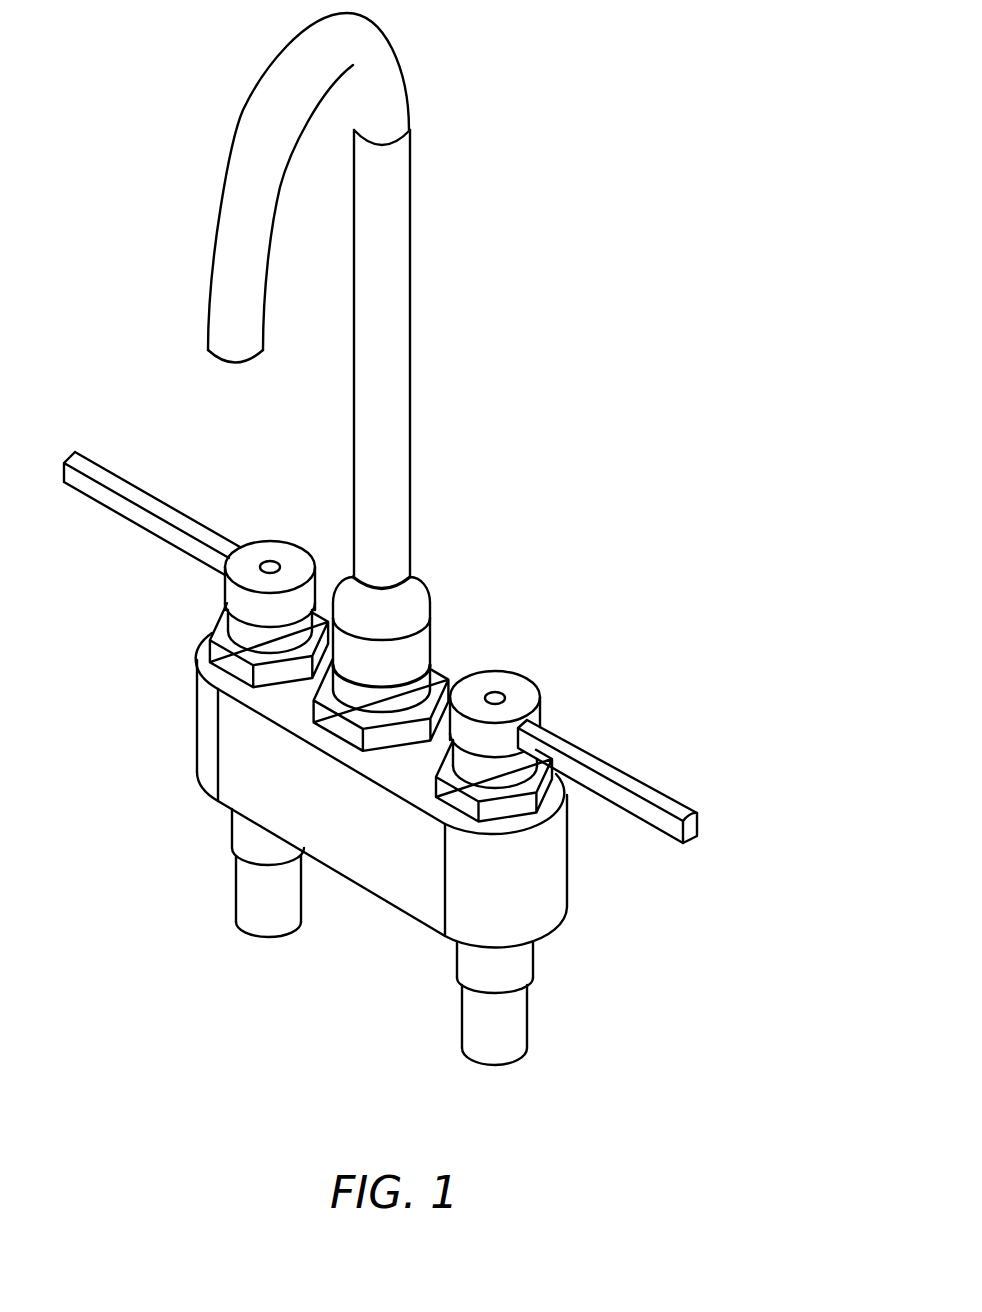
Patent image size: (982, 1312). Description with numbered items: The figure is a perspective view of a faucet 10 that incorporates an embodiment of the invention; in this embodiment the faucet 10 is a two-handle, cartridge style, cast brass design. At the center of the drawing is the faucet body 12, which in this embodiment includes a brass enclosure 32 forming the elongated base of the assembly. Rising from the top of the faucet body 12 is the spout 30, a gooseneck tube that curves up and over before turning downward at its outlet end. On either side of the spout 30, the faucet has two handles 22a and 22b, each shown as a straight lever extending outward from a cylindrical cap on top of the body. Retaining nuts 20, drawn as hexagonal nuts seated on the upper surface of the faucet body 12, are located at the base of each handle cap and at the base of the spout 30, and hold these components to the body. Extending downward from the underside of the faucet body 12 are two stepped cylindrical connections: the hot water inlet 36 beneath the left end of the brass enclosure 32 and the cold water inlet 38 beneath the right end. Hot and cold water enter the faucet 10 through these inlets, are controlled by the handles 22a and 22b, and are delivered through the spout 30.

The faucet 10 is at (733, 343).
The faucet body 12 is at (556, 882).
The retaining nuts 20 is at (218, 640).
The handle 22a is at (172, 506).
The handle 22b is at (643, 778).
The spout 30 is at (410, 337).
The brass enclosure 32 is at (232, 799).
The hot water inlet 36 is at (287, 922).
The cold water inlet 38 is at (528, 1022).